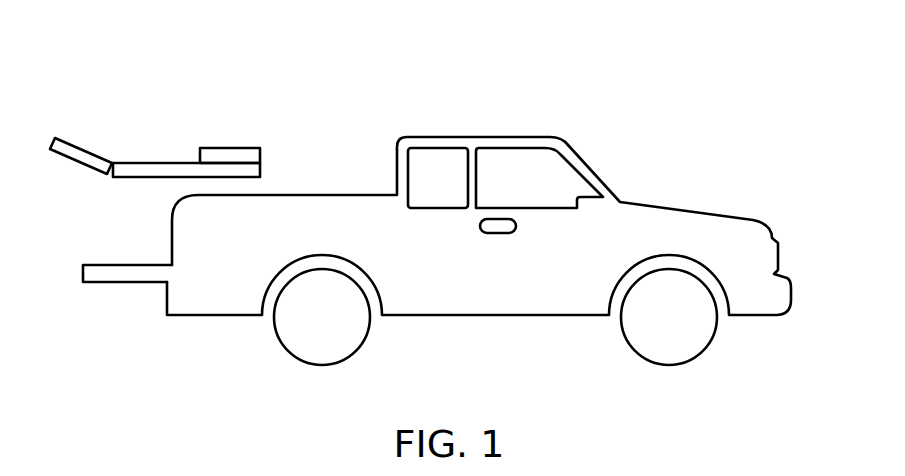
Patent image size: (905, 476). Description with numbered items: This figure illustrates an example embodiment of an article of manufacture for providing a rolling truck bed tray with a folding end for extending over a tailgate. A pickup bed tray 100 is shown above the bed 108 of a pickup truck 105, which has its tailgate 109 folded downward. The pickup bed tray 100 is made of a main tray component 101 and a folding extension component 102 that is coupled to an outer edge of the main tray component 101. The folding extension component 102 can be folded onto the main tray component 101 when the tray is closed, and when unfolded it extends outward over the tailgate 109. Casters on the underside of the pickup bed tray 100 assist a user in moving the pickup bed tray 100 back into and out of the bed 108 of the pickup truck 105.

The pickup bed tray 100 is at (151, 68).
The main tray component 101 is at (177, 162).
The folding extension component 102 is at (95, 170).
The pickup truck 105 is at (520, 136).
The bed 108 is at (314, 195).
The tailgate 109 is at (127, 283).